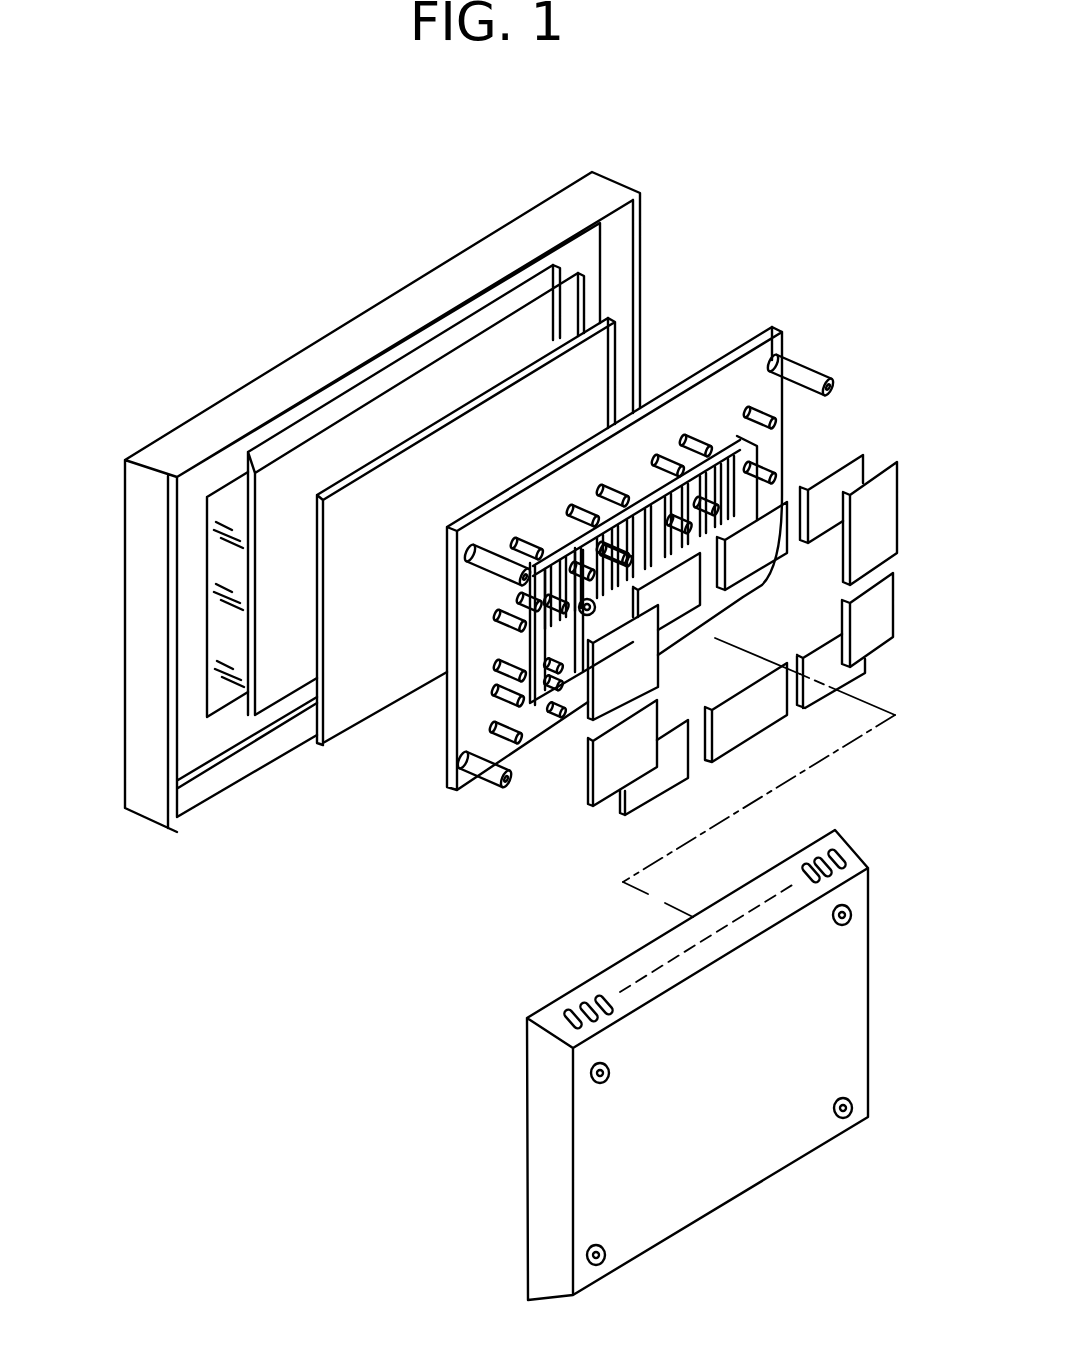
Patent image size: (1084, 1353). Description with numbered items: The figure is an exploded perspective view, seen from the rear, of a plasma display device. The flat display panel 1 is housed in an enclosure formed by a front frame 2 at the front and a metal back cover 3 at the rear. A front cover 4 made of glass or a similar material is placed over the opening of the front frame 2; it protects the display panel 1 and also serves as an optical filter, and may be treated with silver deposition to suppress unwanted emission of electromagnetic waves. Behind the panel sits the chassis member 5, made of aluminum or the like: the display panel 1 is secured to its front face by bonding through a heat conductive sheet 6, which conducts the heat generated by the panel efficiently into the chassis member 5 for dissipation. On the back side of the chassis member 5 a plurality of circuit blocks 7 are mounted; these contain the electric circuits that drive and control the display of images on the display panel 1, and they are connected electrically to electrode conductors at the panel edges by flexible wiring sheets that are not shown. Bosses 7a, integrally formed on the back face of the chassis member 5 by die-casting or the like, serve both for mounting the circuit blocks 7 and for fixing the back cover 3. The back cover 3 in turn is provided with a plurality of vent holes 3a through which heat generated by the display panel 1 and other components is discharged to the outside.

The display panel 1 is at (287, 677).
The front frame 2 is at (102, 865).
The back cover 3 is at (640, 1065).
The vent holes 3a is at (565, 1016).
The front cover 4 is at (222, 638).
The chassis member 5 is at (447, 783).
The heat conductive sheet 6 is at (357, 705).
The circuit blocks 7 is at (610, 768).
The bosses 7a is at (755, 403).